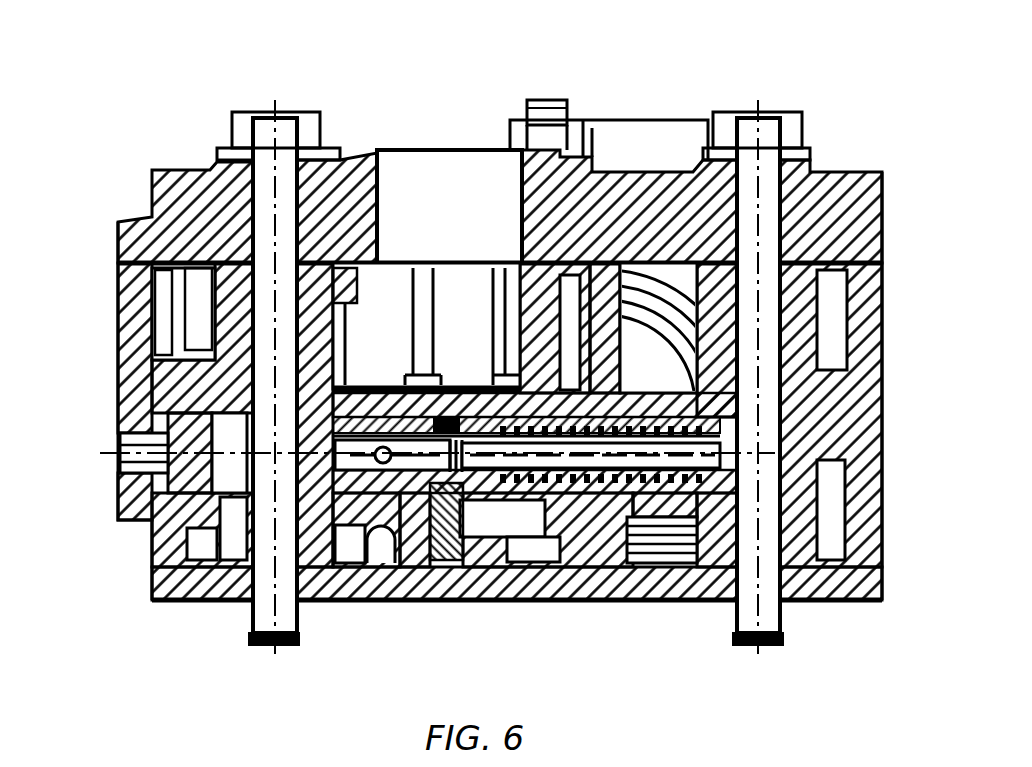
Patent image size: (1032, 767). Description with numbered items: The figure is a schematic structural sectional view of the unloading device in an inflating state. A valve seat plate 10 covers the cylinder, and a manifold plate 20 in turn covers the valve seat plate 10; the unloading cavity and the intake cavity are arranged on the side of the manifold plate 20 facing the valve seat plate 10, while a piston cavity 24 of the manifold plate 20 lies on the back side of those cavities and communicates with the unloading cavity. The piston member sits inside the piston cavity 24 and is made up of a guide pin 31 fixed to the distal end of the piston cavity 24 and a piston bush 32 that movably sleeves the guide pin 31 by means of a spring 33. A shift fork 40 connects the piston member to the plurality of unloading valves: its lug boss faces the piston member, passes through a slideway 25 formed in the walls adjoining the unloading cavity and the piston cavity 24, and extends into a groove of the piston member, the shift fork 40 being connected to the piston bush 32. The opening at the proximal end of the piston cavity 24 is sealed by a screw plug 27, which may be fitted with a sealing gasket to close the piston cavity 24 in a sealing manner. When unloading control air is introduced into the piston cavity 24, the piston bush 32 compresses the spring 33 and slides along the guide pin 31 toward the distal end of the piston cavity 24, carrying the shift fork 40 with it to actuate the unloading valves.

The valve seat plate 10 is at (540, 602).
The manifold plate 20 is at (115, 318).
The piston cavity 24 is at (440, 385).
The slideway 25 is at (511, 515).
The screw plug 27 is at (118, 393).
The guide pin 31 is at (680, 458).
The piston bush 32 is at (377, 500).
The spring 33 is at (638, 427).
The shift fork 40 is at (437, 575).